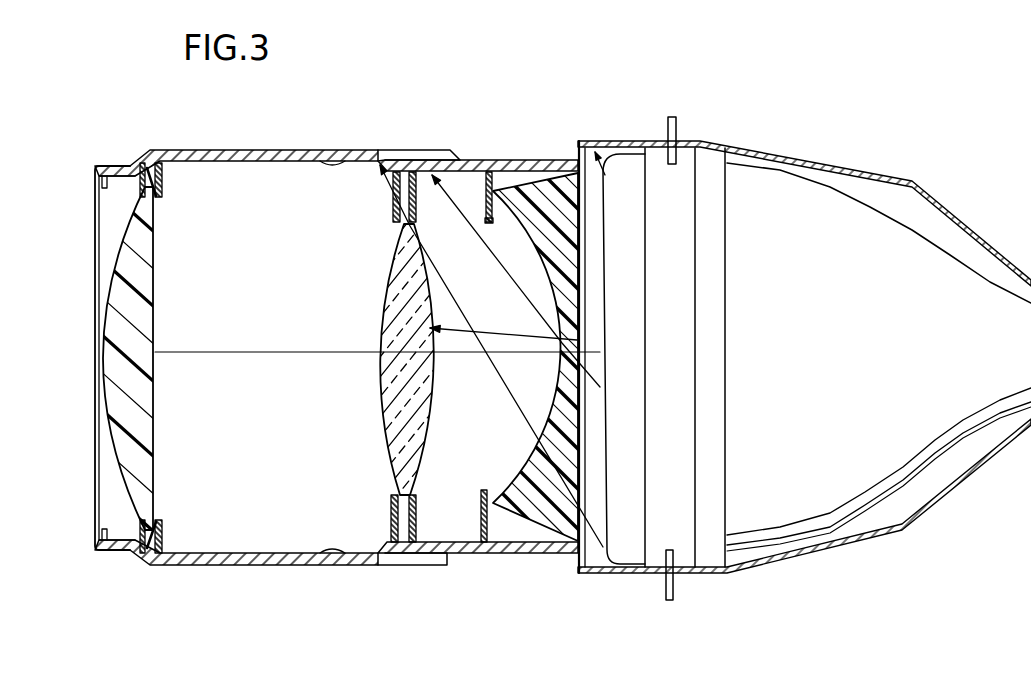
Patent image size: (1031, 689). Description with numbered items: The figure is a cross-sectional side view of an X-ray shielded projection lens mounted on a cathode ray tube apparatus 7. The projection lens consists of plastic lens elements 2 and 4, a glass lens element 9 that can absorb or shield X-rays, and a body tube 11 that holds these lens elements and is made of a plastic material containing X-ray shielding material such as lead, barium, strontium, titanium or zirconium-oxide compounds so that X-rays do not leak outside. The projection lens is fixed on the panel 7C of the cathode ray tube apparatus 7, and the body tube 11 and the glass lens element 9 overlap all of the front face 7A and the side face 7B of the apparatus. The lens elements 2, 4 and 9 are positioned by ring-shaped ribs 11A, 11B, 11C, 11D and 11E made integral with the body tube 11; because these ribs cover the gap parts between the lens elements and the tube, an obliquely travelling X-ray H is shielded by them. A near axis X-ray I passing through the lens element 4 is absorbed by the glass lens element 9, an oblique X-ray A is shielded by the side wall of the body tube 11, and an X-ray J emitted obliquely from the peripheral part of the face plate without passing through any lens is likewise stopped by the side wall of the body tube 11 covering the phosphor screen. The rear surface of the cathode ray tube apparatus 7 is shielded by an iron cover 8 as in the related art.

The body tube 11 is at (268, 150).
The plastic lens element 2 is at (117, 430).
The glass lens element 9 is at (382, 412).
The plastic lens element 4 is at (505, 520).
The cathode ray tube apparatus 7 is at (781, 195).
The front face 7A is at (602, 455).
The side face 7B is at (627, 573).
The panel 7C is at (667, 603).
The iron cover 8 is at (823, 547).
The ring-shaped rib 11A is at (484, 518).
The ring-shaped rib 11B is at (414, 514).
The ring-shaped rib 11C is at (391, 513).
The ring-shaped rib 11D is at (167, 565).
The ring-shaped rib 11E is at (118, 565).
The oblique X-ray A is at (491, 356).
The obliquely travelling X-ray H is at (442, 249).
The near axis X-ray I is at (503, 319).
The X-ray J is at (594, 171).